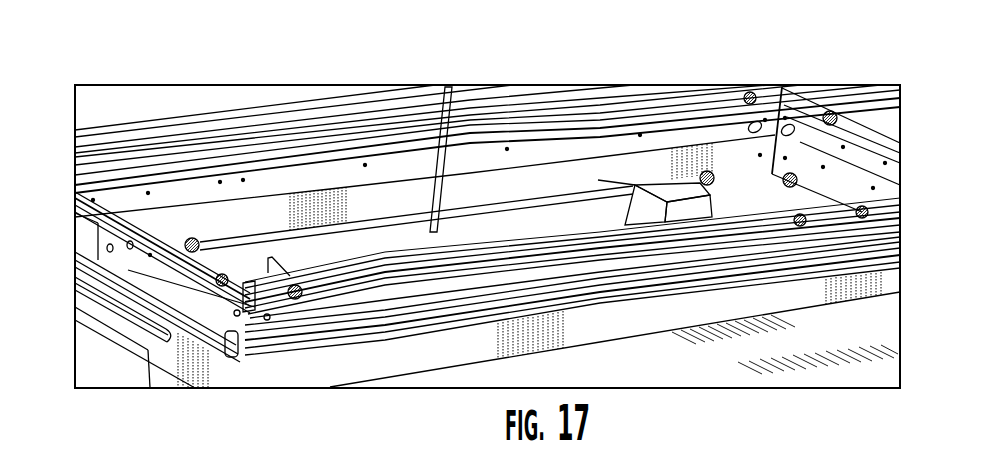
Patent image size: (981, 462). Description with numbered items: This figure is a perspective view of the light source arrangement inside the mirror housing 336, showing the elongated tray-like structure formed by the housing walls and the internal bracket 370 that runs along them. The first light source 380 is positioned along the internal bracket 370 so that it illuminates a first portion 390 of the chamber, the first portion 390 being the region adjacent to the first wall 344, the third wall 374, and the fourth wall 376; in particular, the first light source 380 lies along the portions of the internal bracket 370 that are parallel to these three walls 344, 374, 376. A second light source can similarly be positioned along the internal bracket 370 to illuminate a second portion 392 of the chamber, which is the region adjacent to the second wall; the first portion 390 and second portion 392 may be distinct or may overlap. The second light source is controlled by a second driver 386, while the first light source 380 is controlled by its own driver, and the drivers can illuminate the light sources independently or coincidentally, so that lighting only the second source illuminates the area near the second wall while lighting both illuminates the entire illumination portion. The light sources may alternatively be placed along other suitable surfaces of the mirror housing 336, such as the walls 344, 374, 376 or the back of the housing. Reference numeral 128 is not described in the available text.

The housing 128 is at (130, 113).
The second portion 392 is at (205, 163).
The fourth wall 376 is at (296, 135).
The internal bracket 370 is at (623, 157).
The second driver 386 is at (720, 180).
The first light source 380 is at (113, 308).
The mirror housing 336 is at (784, 300).
The third wall 374 is at (612, 340).
The first wall 344 is at (147, 352).
The first portion 390 is at (78, 277).